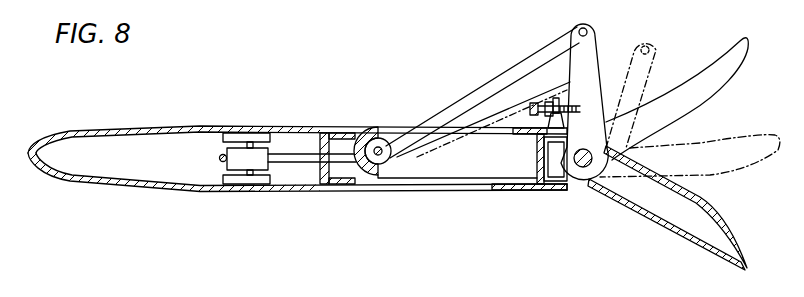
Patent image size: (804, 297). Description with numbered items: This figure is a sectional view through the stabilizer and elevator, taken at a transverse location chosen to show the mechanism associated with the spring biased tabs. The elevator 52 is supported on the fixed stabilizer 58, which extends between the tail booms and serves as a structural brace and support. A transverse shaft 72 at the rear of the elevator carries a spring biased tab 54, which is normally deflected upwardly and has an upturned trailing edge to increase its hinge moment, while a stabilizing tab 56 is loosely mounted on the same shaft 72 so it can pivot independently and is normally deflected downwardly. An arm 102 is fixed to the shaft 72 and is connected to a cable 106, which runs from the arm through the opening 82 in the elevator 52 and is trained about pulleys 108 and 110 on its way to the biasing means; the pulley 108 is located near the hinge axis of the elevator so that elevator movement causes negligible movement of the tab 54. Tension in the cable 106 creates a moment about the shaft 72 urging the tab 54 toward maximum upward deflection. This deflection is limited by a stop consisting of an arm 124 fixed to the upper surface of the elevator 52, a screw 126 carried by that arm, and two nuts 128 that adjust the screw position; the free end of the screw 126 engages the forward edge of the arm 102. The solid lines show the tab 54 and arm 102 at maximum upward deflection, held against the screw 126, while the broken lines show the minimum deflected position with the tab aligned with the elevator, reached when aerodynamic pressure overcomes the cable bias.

The elevator 52 is at (508, 188).
The spring biased tab 54 is at (690, 78).
The stabilizing tab 56 is at (667, 223).
The fixed stabilizer 58 is at (252, 128).
The transverse shaft 72 is at (587, 168).
The opening 82 is at (436, 178).
The arm 102 is at (598, 48).
The cable 106 is at (482, 88).
The pulley 108 is at (381, 139).
The pulley 110 is at (276, 166).
The arm 124 is at (553, 98).
The screw 126 is at (532, 103).
The nut 128 is at (565, 113).